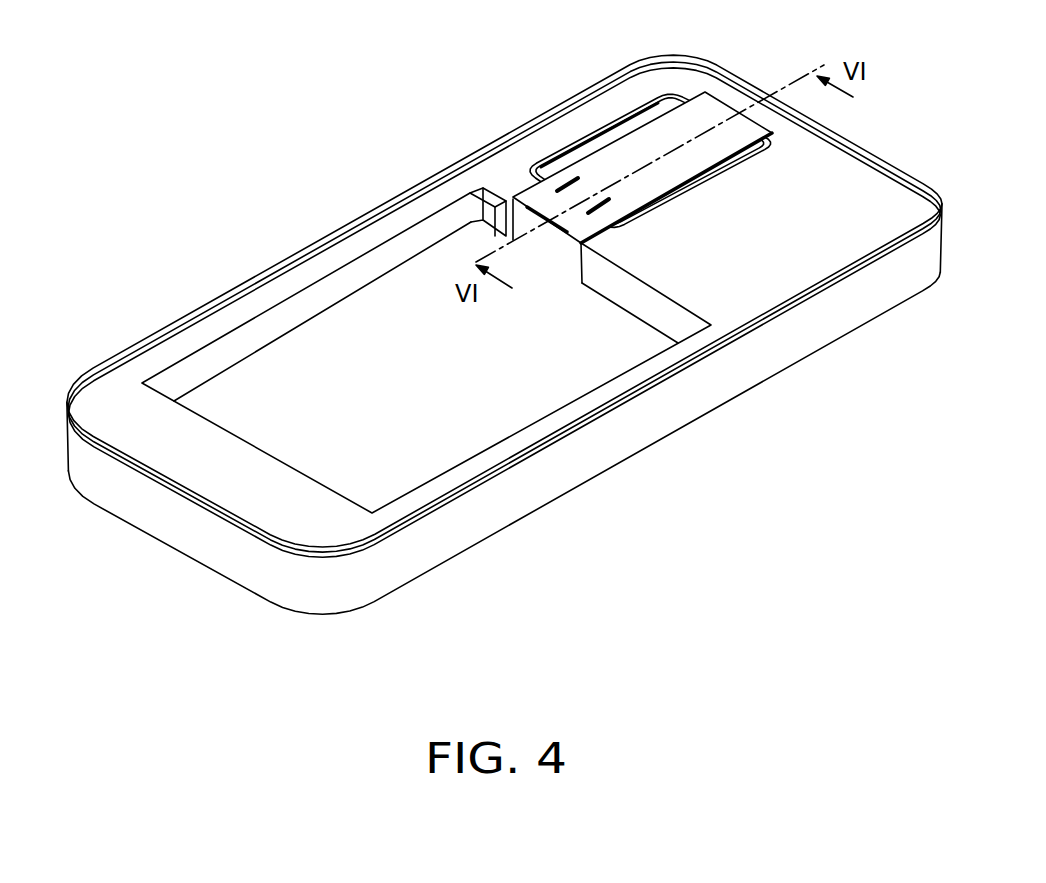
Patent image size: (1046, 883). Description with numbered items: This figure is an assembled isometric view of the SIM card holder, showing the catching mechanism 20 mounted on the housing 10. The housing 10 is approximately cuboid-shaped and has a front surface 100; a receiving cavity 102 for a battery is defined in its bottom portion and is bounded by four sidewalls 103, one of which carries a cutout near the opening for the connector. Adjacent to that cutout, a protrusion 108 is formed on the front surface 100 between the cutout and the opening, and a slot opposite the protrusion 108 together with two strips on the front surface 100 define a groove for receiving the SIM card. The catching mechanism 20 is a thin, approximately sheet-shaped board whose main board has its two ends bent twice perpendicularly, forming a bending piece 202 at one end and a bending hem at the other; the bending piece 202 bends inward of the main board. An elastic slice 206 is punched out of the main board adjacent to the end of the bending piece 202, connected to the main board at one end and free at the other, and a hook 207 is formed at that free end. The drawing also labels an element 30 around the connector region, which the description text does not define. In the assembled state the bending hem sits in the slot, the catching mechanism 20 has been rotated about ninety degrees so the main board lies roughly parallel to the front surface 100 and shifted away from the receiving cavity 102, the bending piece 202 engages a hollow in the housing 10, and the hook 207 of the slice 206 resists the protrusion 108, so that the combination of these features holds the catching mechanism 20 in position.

The housing 10 is at (758, 352).
The front surface 100 is at (850, 163).
The receiving cavity 102 is at (415, 460).
The sidewall 103 is at (362, 277).
The protrusion 108 is at (482, 193).
The catching mechanism 20 is at (658, 132).
The bending piece 202 is at (571, 243).
The elastic slice 206 is at (585, 187).
The hook 207 is at (540, 200).
The cover frame 30 is at (672, 103).